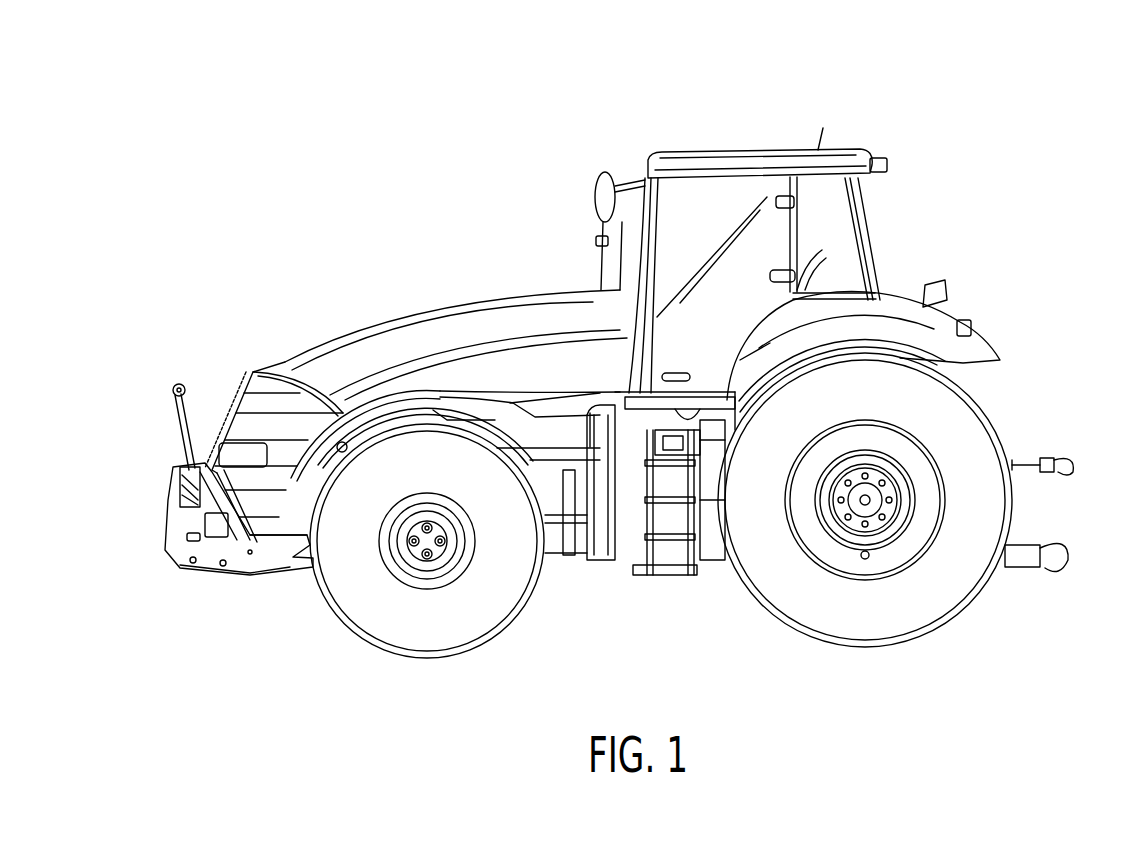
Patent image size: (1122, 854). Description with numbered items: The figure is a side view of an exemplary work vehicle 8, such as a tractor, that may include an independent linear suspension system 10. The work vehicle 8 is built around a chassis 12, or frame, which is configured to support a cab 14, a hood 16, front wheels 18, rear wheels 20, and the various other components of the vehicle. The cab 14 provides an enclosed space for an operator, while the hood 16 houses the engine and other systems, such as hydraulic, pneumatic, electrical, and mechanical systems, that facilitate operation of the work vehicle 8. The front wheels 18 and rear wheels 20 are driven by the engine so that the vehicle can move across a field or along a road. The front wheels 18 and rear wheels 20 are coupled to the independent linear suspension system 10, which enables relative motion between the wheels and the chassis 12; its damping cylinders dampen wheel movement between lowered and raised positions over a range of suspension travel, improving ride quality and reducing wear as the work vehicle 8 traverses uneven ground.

The work vehicle 8 is at (332, 176).
The independent linear suspension system 10 is at (551, 600).
The chassis 12 is at (270, 540).
The cab 14 is at (818, 158).
The hood 16 is at (422, 316).
The front wheels 18 is at (362, 623).
The rear wheels 20 is at (812, 625).